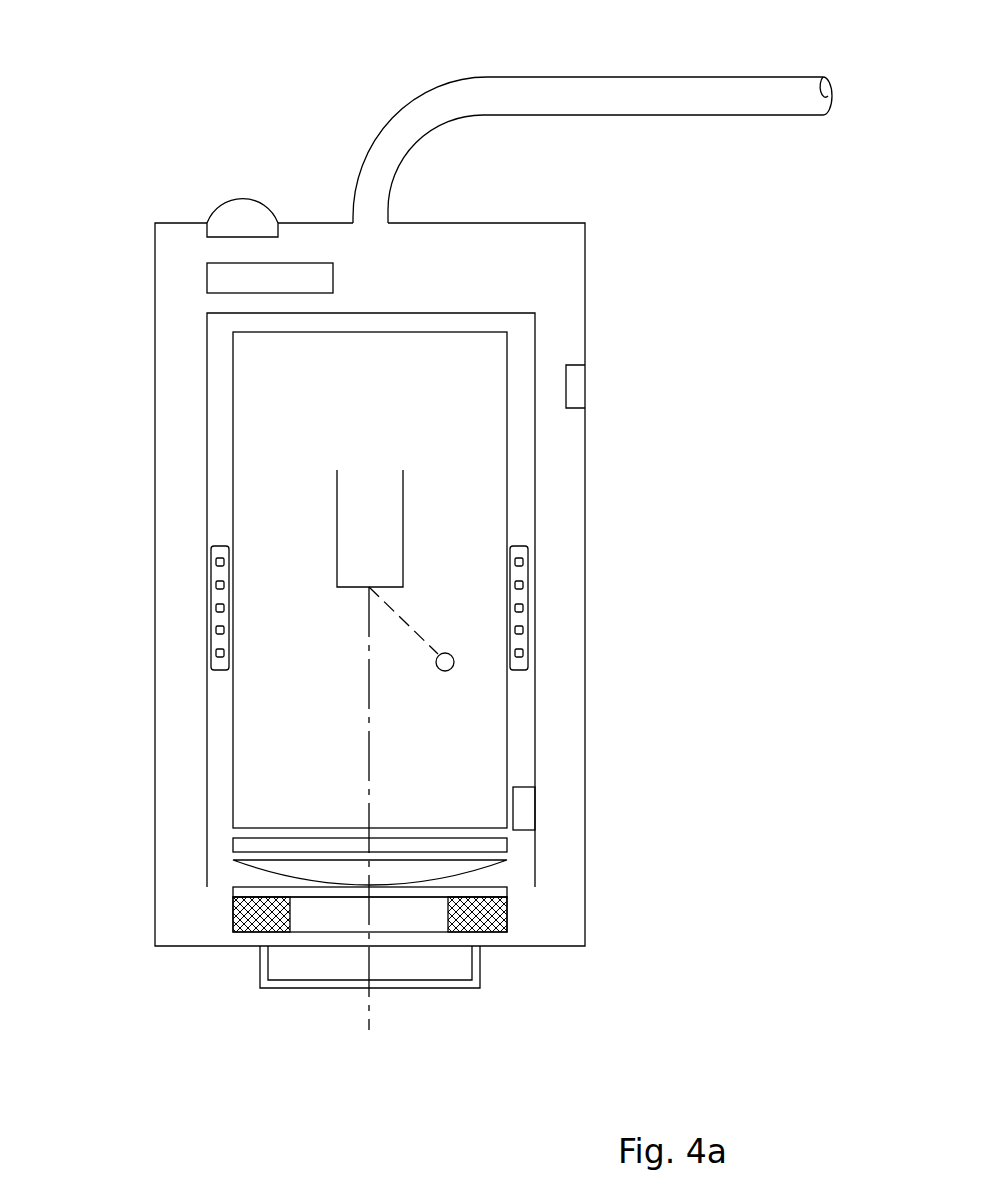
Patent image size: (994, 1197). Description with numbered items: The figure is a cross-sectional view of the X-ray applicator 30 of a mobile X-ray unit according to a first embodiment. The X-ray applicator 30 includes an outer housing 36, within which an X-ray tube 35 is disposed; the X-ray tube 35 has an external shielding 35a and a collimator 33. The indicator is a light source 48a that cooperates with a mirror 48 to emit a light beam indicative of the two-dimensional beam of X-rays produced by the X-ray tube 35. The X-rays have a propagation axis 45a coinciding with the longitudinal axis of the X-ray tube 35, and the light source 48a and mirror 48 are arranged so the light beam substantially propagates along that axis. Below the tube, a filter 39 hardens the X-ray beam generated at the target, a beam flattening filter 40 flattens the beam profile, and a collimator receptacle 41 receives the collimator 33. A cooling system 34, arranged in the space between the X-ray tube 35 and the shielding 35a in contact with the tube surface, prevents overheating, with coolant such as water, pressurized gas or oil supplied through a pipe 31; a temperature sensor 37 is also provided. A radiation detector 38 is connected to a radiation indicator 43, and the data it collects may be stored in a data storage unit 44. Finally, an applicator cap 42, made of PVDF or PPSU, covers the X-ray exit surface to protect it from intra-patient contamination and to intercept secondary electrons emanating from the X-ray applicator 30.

The X-ray applicator 30 is at (138, 103).
The pipe 31 is at (678, 77).
The collimator 33 is at (233, 918).
The cooling system 34 is at (205, 643).
The X-ray tube 35 is at (507, 457).
The external shielding 35a is at (535, 504).
The outer housing 36 is at (585, 280).
The temperature sensor 37 is at (575, 387).
The radiation detector 38 is at (523, 809).
The filter 39 is at (507, 847).
The beam flattening filter 40 is at (510, 862).
The collimator receptacle 41 is at (510, 892).
The applicator cap 42 is at (481, 971).
The radiation indicator 43 is at (243, 199).
The data storage unit 44 is at (207, 278).
The propagation axis 45a is at (365, 705).
The mirror 48 is at (403, 492).
The light source 48a is at (445, 671).